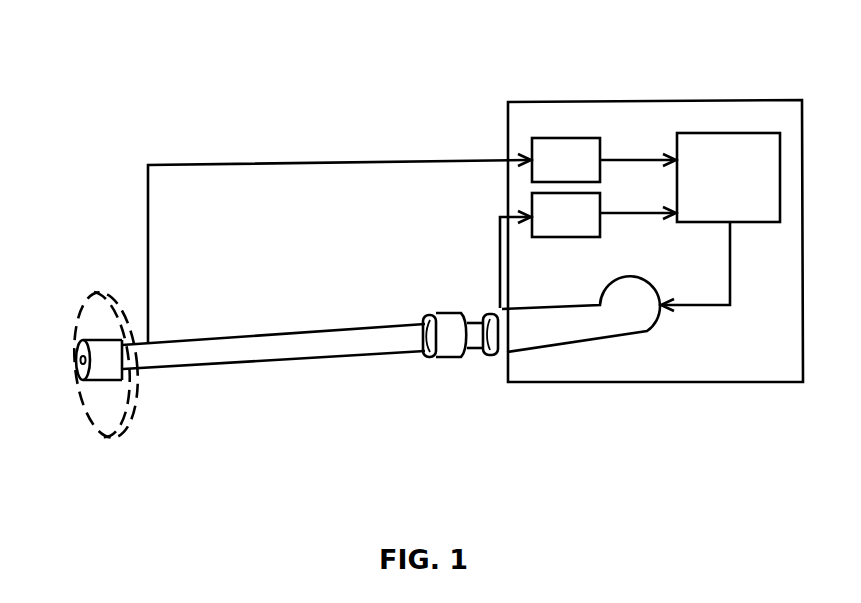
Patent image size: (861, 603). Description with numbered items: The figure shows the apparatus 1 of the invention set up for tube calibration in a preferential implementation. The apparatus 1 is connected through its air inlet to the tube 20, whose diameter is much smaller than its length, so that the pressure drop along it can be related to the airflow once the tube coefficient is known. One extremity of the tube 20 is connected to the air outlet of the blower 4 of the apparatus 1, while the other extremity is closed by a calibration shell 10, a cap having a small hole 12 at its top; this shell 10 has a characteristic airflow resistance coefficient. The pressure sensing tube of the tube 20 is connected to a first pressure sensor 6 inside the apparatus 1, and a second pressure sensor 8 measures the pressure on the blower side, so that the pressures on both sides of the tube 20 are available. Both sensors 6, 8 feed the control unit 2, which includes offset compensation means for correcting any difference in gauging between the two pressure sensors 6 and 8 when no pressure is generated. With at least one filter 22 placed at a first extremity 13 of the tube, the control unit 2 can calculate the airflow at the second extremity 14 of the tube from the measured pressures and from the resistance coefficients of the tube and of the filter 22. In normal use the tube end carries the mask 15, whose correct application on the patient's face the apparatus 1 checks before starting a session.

The apparatus 1 is at (748, 82).
The control unit 2 is at (772, 187).
The blower 4 is at (628, 337).
The first pressure sensor 6 is at (538, 150).
The pressure sensor 8 is at (542, 213).
The calibration shell 10 is at (100, 337).
The small hole 12 is at (77, 360).
The first extremity 13 is at (128, 333).
The second extremity 14 is at (420, 320).
The mask 15 is at (108, 438).
The tube 20 is at (220, 357).
The filter 22 is at (452, 348).